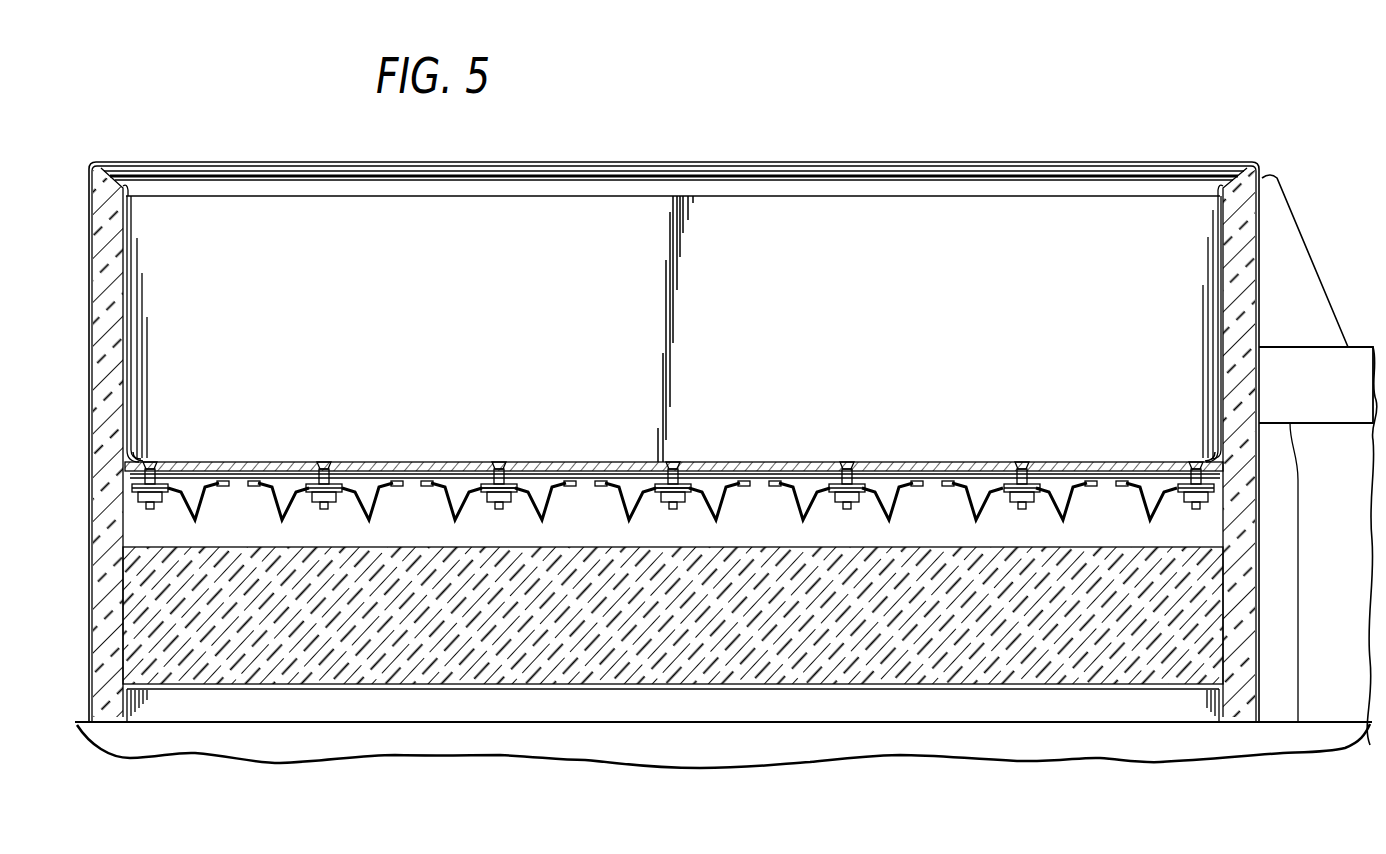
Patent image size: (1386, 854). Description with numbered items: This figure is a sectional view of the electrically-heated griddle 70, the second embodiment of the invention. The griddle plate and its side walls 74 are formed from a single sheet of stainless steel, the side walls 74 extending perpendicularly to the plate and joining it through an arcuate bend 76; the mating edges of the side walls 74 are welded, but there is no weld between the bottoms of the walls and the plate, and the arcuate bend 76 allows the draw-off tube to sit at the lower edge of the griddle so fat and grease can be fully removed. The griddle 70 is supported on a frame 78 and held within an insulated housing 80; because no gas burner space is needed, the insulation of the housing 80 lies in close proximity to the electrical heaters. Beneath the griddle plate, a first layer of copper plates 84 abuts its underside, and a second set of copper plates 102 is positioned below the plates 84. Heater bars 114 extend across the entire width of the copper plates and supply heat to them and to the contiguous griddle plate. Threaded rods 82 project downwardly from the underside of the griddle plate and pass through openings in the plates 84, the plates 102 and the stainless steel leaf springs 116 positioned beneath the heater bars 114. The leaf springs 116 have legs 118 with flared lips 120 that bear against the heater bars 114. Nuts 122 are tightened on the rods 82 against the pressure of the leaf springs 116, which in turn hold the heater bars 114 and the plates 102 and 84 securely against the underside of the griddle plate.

The electrically-heated griddle 70 is at (396, 425).
The side walls 74 is at (133, 296).
The arcuate bend 76 is at (137, 462).
The frame 78 is at (1302, 334).
The insulated housing 80 is at (1160, 155).
The threaded rods 82 is at (158, 503).
The first layer of copper plates 84 is at (628, 462).
The second set of copper plates 102 is at (548, 470).
The heater bars 114 is at (413, 487).
The stainless steel leaf springs 116 is at (210, 497).
The legs 118 is at (800, 512).
The flared lips 120 is at (773, 488).
The nuts 122 is at (475, 497).